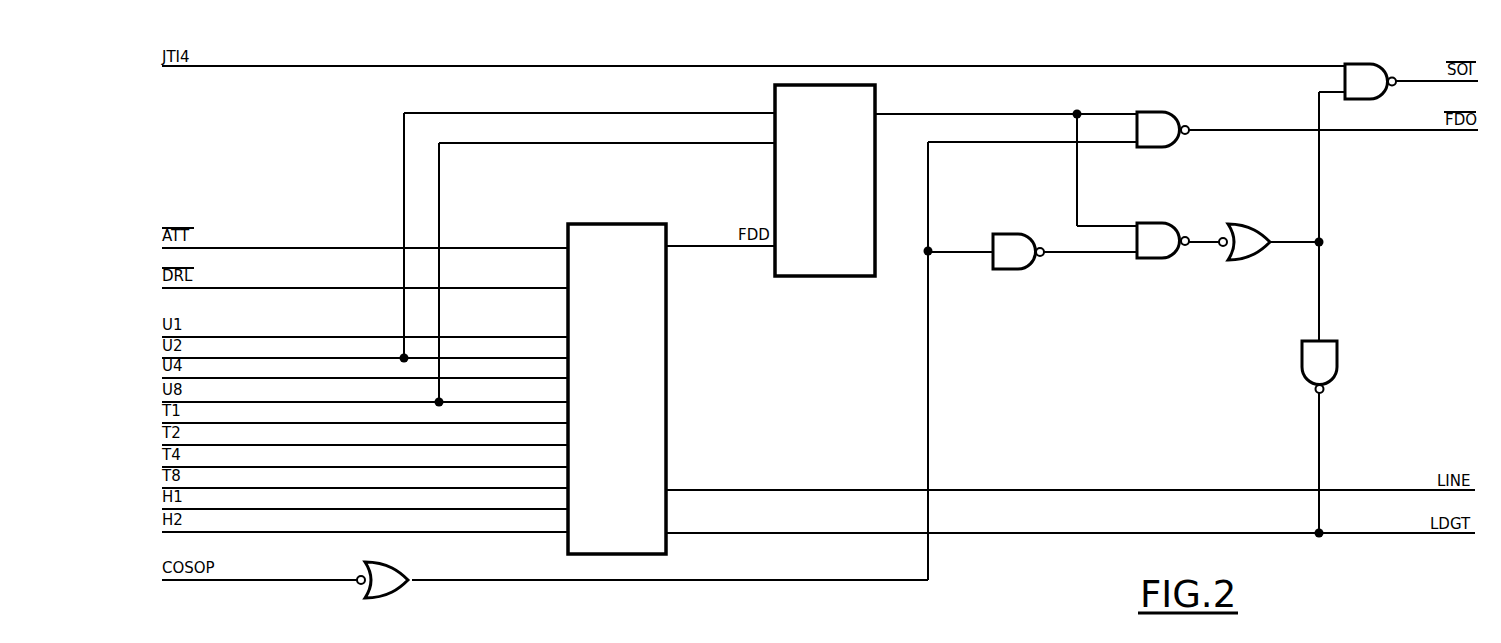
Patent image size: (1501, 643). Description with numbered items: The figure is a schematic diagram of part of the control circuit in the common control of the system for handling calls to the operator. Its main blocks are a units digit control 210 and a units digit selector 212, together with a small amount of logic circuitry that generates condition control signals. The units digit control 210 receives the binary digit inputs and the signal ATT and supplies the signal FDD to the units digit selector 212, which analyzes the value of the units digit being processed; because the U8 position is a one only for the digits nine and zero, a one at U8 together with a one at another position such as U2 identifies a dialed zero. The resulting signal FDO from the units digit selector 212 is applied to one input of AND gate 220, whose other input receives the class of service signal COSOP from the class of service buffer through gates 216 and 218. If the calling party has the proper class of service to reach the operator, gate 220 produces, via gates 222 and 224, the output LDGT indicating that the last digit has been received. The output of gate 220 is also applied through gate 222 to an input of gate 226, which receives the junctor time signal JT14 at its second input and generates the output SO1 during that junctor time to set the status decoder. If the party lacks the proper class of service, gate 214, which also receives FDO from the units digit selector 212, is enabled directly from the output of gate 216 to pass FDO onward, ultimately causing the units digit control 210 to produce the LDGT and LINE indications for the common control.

The units digit control 210 is at (667, 415).
The units digit selector 212 is at (775, 205).
The gate 214 is at (1152, 112).
The gate 216 is at (406, 562).
The gate 218 is at (1000, 270).
The AND gate 220 is at (1150, 258).
The gate 222 is at (1250, 262).
The gate 224 is at (1300, 366).
The gate 226 is at (1345, 65).